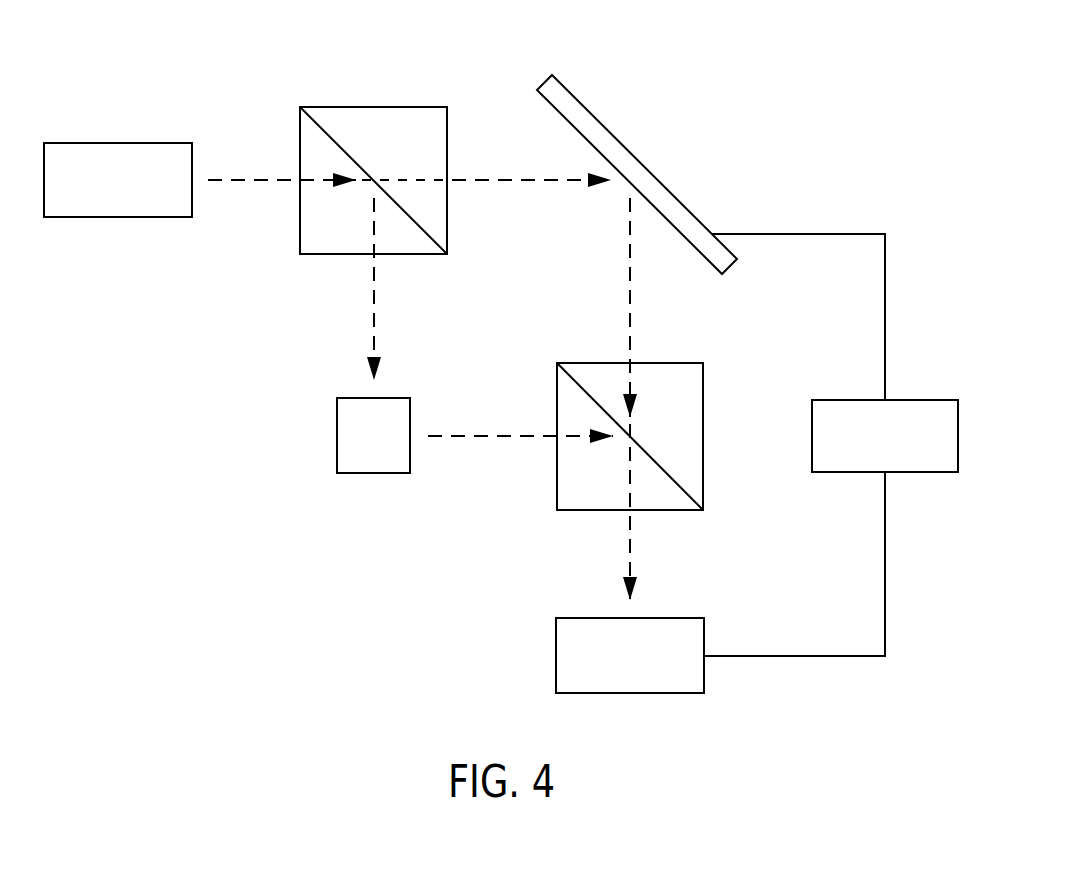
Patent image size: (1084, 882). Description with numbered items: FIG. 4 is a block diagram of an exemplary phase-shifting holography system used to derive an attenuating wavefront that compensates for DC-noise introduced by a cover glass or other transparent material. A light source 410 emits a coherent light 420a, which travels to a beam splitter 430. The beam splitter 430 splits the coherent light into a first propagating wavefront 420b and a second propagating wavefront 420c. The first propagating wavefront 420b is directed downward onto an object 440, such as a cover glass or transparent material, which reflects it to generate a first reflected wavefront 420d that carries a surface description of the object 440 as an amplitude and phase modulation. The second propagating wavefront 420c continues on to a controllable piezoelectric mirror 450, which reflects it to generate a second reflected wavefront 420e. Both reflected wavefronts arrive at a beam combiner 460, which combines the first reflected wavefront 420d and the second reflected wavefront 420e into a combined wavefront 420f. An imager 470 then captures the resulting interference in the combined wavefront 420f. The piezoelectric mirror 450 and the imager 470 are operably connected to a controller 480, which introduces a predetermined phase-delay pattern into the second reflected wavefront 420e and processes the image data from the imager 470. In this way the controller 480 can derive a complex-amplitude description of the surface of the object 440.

The light source 410 is at (77, 143).
The coherent light 420a is at (243, 182).
The first propagating wavefront 420b is at (373, 330).
The second propagating wavefront 420c is at (518, 182).
The first reflected wavefront 420d is at (460, 437).
The second reflected wavefront 420e is at (629, 332).
The combined wavefront 420f is at (630, 560).
The beam splitter 430 is at (350, 107).
The object 440 is at (337, 442).
The controllable piezoelectric mirror 450 is at (613, 135).
The beam combiner 460 is at (603, 510).
The imager 470 is at (556, 657).
The controller 480 is at (937, 399).